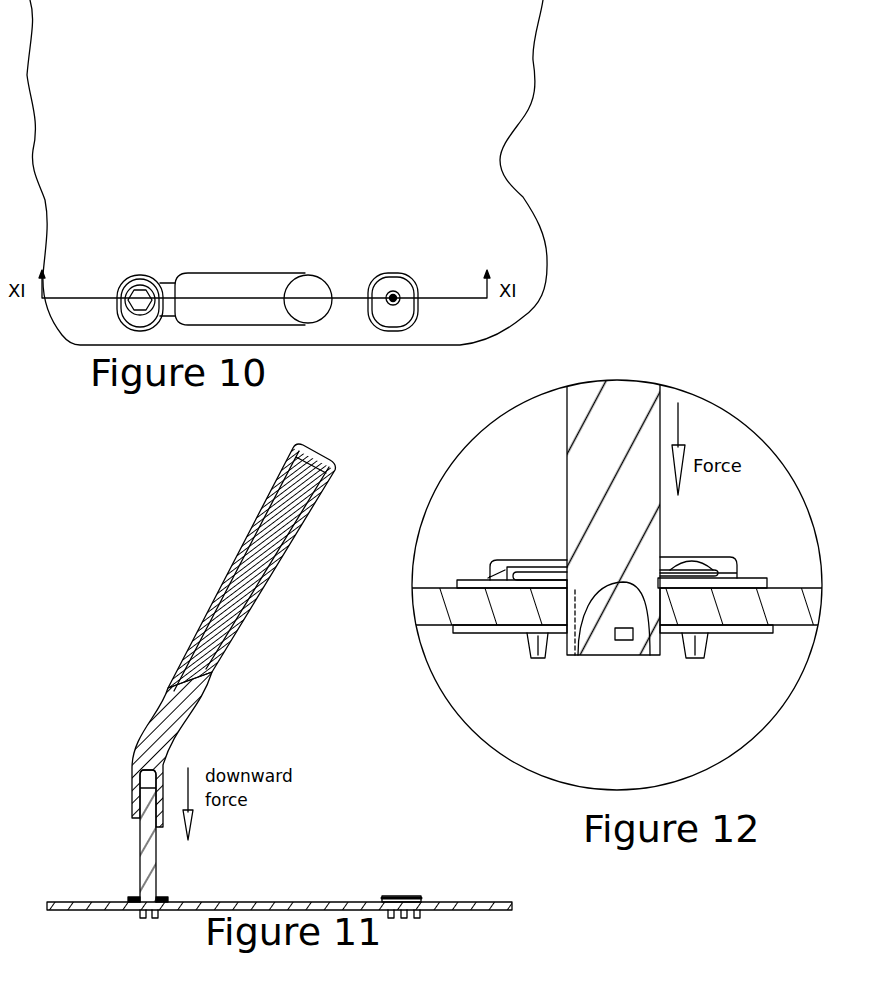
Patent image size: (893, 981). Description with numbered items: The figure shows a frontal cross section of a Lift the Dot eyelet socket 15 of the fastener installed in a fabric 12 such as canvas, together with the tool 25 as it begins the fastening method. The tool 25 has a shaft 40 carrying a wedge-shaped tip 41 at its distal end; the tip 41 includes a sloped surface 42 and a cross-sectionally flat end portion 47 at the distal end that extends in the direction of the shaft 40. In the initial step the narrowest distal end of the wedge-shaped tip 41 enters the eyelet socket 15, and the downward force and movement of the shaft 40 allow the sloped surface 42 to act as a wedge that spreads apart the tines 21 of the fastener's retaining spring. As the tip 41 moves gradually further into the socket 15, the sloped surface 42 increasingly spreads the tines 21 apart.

In FIG. 10, the fabric 12 is at (505, 177).
In FIG. 11, the fabric 12 is at (291, 898).
In FIG. 12, the fabric 12 is at (419, 585).
In FIG. 10, the eyelet socket portion 15 is at (141, 270).
In FIG. 11, the eyelet socket portion 15 is at (164, 897).
In FIG. 12, the eyelet socket portion 15 is at (679, 555).
In FIG. 10, the tool 25 is at (247, 262).
In FIG. 11, the shaft 40 is at (138, 862).
In FIG. 12, the shaft 40 is at (567, 470).
In FIG. 11, the wedge-shaped tip 41 is at (140, 912).
In FIG. 12, the wedge-shaped tip 41 is at (566, 603).
In FIG. 12, the tines 21 is at (561, 552).
In FIG. 12, the end portion 47 is at (563, 642).
In FIG. 12, the sloped surface 42 is at (635, 615).